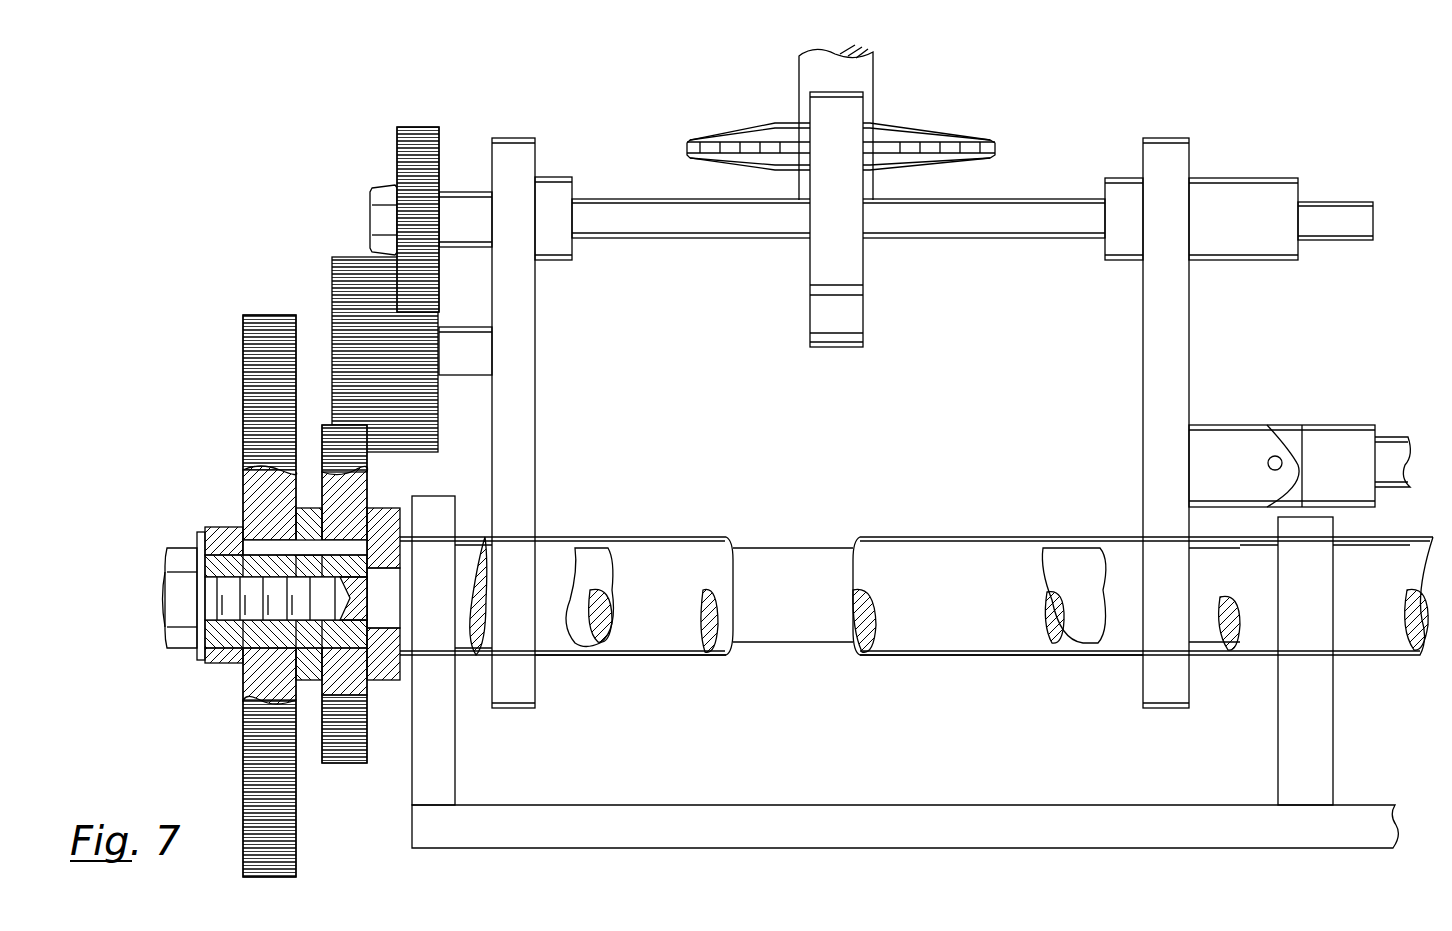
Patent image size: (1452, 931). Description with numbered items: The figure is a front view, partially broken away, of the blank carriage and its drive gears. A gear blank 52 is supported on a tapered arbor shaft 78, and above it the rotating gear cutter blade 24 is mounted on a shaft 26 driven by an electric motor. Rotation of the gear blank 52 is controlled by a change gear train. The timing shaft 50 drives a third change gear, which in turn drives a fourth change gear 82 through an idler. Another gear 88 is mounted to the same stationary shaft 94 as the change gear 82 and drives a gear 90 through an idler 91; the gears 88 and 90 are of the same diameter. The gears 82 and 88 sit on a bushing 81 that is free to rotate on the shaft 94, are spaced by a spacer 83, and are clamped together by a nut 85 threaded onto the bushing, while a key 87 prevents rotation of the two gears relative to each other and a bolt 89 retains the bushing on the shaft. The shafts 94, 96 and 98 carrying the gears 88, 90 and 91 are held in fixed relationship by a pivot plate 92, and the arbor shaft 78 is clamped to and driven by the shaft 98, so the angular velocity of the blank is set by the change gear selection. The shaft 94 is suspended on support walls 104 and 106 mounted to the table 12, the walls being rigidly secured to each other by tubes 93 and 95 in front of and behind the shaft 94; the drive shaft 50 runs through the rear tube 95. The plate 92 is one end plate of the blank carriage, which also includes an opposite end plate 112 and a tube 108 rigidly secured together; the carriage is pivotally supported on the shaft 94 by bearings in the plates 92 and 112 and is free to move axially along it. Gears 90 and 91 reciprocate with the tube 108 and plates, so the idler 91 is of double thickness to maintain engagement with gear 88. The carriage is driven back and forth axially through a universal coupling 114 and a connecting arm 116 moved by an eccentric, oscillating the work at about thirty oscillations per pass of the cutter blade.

The table 12 is at (988, 805).
The gear cutter blade 24 is at (905, 125).
The shaft 26 is at (875, 78).
The timing shaft 50 is at (830, 548).
The gear blank 52 is at (843, 348).
The shaft 78 is at (1005, 240).
The bushing 81 is at (378, 680).
The fourth change gear 82 is at (296, 845).
The spacer 83 is at (305, 680).
The nut 85 is at (215, 663).
The key 87 is at (265, 525).
The gear 88 is at (330, 763).
The bolt 89 is at (165, 605).
The gear 90 is at (418, 127).
The idler 91 is at (352, 257).
The pivot plate 92 is at (535, 372).
The tube 93 is at (480, 537).
The shaft 94 is at (485, 650).
The tube 95 is at (680, 537).
The shaft 96 is at (472, 308).
The shaft 98 is at (455, 192).
The support wall 104 is at (455, 755).
The support wall 106 is at (1278, 720).
The tube 108 is at (545, 655).
The end plate 112 is at (1143, 318).
The universal coupling 114 is at (1268, 425).
The connecting arm 116 is at (1398, 437).